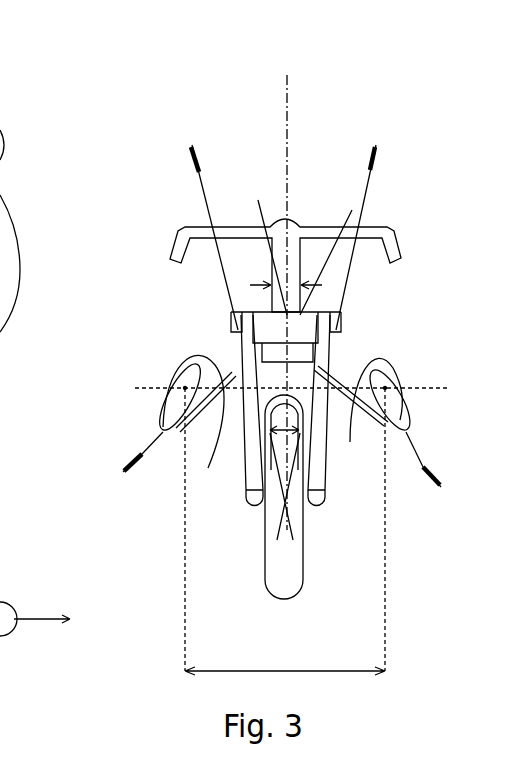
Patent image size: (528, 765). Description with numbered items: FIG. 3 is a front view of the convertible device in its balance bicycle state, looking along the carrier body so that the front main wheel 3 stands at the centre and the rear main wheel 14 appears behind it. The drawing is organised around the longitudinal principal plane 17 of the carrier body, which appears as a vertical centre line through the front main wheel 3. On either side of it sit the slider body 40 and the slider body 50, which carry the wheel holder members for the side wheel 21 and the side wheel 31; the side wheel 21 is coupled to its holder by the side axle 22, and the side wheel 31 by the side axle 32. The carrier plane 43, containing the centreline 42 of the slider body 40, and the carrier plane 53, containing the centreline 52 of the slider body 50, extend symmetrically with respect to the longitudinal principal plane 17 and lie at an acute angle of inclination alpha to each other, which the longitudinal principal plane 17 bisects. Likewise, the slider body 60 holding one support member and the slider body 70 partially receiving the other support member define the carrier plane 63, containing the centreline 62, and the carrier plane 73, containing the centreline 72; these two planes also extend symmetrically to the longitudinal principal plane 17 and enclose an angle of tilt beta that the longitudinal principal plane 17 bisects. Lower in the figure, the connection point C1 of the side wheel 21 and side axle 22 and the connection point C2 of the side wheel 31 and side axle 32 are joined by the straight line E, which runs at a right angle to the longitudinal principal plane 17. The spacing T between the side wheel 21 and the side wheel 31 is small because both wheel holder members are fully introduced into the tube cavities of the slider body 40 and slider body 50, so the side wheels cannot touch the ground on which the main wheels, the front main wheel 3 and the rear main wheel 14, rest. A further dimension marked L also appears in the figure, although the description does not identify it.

The front wheel 3 is at (305, 482).
The rear main wheel 14 is at (5, 200).
The longitudinal principal plane 17 is at (288, 78).
The side wheel 21 is at (230, 410).
The side axle 22 is at (215, 362).
The side wheel 31 is at (336, 410).
The side axle 32 is at (405, 375).
The slider body 40 is at (230, 325).
The centreline 42 is at (155, 428).
The carrier plane 43 is at (141, 460).
The slider body 50 is at (348, 362).
The centreline 52 is at (403, 443).
The carrier plane 53 is at (423, 490).
The slider body 60 is at (232, 332).
The centreline 62 is at (230, 337).
The carrier plane 63 is at (190, 155).
The slider body 70 is at (340, 335).
The centreline 72 is at (322, 285).
The carrier plane 73 is at (386, 142).
The connection point C1 is at (183, 388).
The connection point C2 is at (388, 388).
The straight line E is at (388, 386).
The length L is at (268, 226).
The spacing T is at (270, 672).